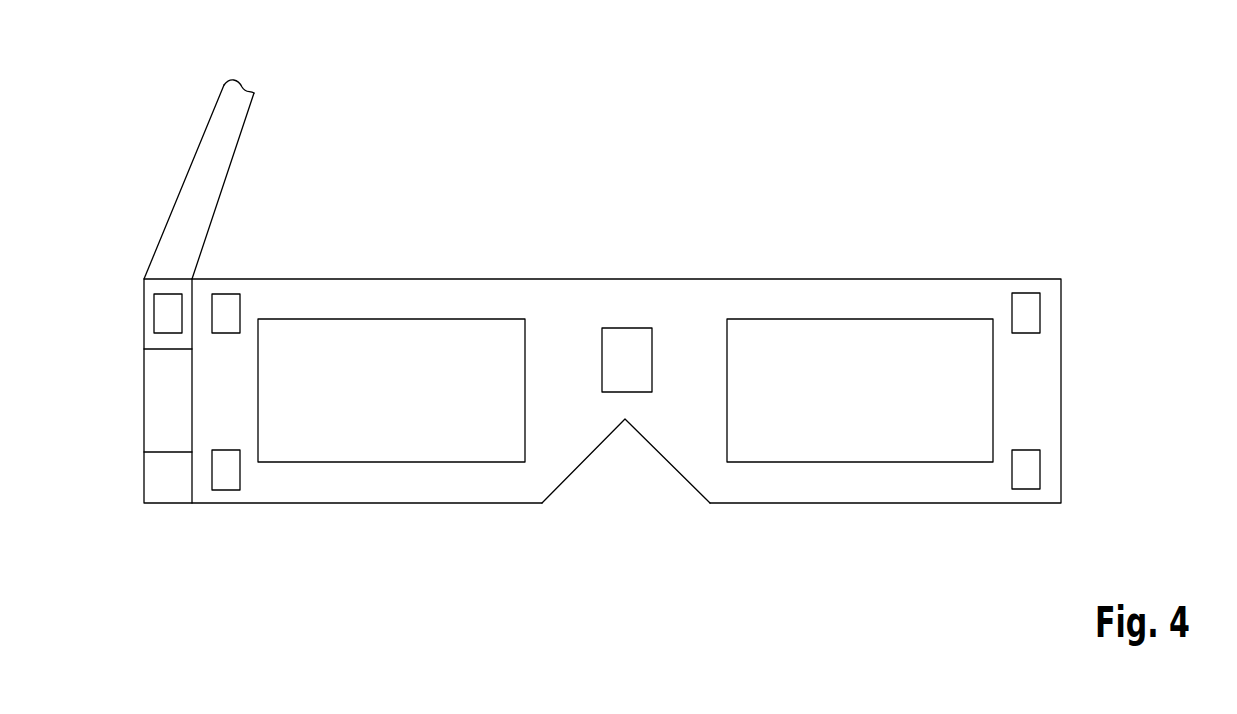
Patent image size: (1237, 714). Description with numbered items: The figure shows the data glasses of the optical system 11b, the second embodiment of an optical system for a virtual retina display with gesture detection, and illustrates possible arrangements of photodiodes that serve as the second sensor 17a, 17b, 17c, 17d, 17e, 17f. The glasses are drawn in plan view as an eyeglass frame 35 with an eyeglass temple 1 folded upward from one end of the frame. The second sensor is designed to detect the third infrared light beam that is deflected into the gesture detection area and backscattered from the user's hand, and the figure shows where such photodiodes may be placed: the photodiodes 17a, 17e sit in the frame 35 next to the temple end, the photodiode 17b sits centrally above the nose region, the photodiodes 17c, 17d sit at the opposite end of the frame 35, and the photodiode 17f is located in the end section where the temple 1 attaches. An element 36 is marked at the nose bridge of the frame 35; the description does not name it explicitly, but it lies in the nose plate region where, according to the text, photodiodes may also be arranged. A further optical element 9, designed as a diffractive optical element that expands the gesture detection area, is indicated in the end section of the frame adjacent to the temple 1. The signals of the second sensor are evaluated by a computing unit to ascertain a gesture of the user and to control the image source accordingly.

The optical system 11b is at (398, 90).
The eyeglass temple 1 is at (213, 160).
The further optical element 9 is at (167, 397).
The photodiode of the second sensor 17a is at (225, 309).
The photodiode of the second sensor 17b is at (628, 348).
The photodiode of the second sensor 17c is at (1028, 313).
The photodiode of the second sensor 17d is at (1028, 468).
The photodiode of the second sensor 17e is at (225, 475).
The photodiode of the second sensor 17f is at (167, 312).
The eyeglass frame 35 is at (868, 300).
The nose bridge 36 is at (626, 402).